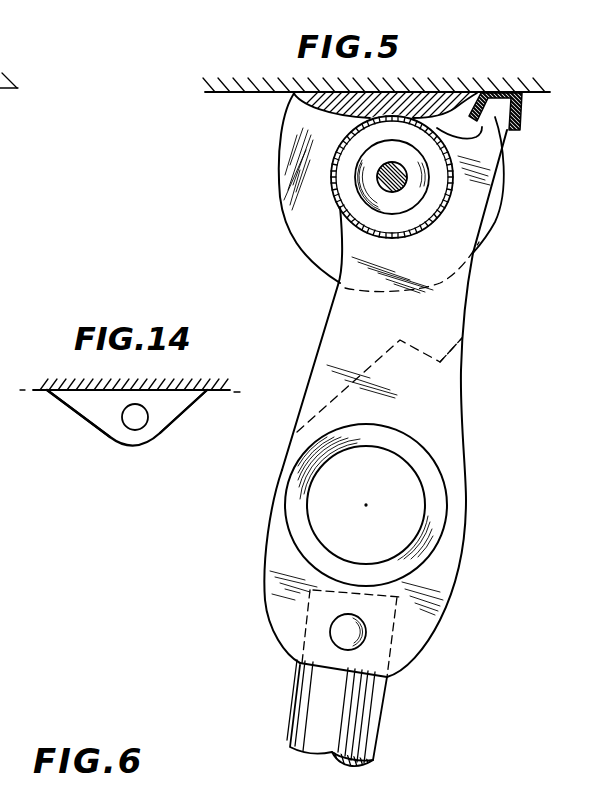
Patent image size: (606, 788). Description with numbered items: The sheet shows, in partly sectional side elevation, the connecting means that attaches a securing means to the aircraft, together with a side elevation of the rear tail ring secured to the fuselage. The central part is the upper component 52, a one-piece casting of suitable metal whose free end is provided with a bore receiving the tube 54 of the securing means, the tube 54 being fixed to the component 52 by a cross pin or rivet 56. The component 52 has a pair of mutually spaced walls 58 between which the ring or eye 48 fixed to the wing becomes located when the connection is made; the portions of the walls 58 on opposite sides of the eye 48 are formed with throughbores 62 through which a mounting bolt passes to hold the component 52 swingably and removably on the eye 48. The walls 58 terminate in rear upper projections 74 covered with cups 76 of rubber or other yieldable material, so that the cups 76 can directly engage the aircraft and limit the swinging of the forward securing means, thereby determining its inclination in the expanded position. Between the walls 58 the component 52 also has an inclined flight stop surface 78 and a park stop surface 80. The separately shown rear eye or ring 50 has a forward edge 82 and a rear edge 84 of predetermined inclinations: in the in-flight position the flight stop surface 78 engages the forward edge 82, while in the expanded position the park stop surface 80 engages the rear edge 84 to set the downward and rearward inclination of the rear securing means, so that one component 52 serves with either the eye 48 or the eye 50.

In FIG. 5, the ring or eye 48 is at (288, 124).
In FIG. 14, the eye or ring 50 is at (162, 430).
In FIG. 5, the upper component 52 is at (265, 540).
In FIG. 5, the tube 54 is at (300, 715).
In FIG. 5, the cross pin or rivet 56 is at (365, 637).
In FIG. 5, the walls 58 is at (352, 320).
In FIG. 5, the throughbores 62 is at (423, 213).
In FIG. 5, the rear upper projections 74 is at (503, 157).
In FIG. 5, the cups 76 is at (490, 93).
In FIG. 5, the inclined flight stop surface 78 is at (298, 410).
In FIG. 5, the park stop surface 80 is at (469, 337).
In FIG. 14, the forward edge 82 is at (74, 410).
In FIG. 14, the rear edge 84 is at (195, 412).